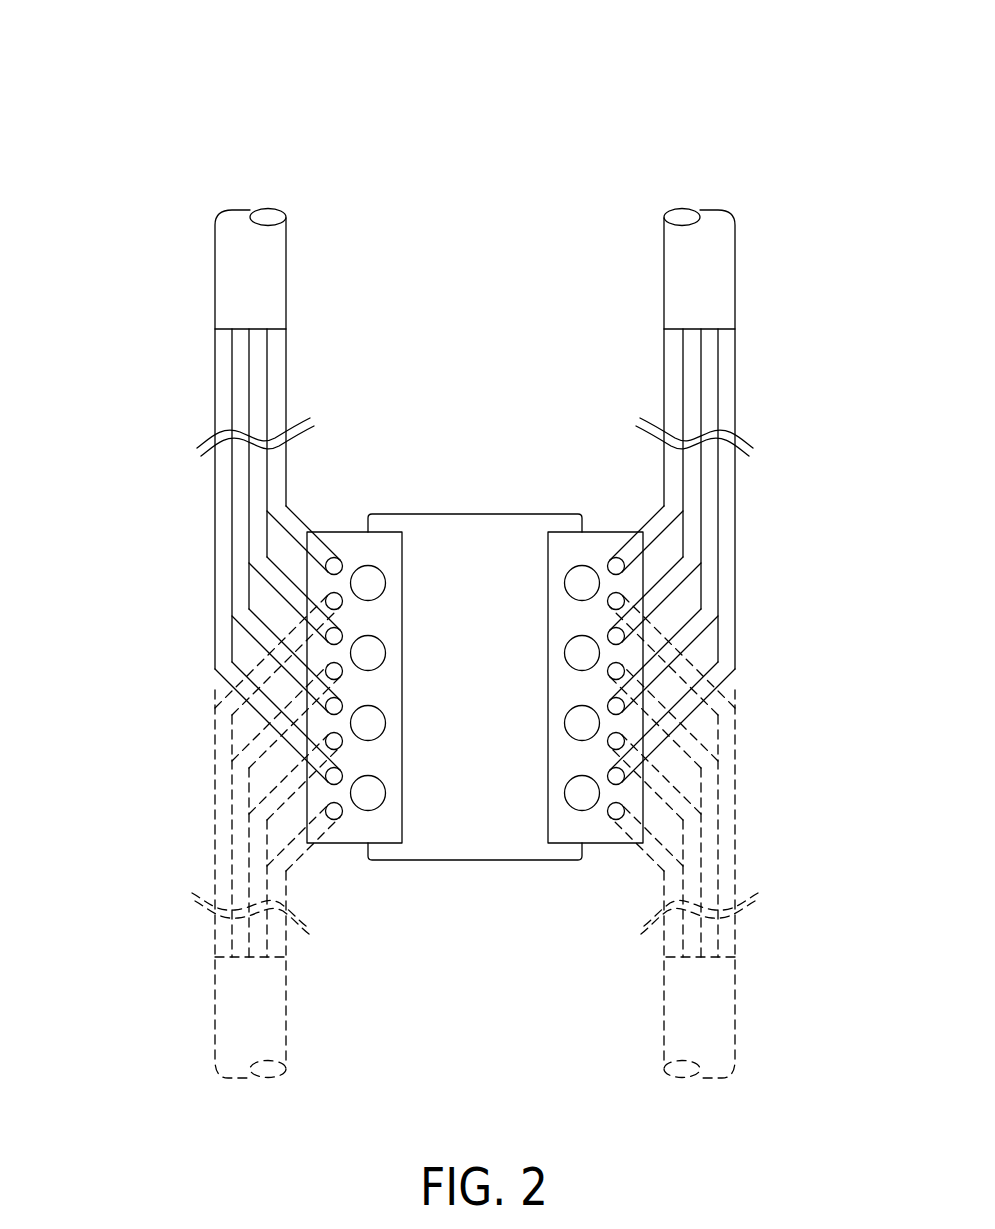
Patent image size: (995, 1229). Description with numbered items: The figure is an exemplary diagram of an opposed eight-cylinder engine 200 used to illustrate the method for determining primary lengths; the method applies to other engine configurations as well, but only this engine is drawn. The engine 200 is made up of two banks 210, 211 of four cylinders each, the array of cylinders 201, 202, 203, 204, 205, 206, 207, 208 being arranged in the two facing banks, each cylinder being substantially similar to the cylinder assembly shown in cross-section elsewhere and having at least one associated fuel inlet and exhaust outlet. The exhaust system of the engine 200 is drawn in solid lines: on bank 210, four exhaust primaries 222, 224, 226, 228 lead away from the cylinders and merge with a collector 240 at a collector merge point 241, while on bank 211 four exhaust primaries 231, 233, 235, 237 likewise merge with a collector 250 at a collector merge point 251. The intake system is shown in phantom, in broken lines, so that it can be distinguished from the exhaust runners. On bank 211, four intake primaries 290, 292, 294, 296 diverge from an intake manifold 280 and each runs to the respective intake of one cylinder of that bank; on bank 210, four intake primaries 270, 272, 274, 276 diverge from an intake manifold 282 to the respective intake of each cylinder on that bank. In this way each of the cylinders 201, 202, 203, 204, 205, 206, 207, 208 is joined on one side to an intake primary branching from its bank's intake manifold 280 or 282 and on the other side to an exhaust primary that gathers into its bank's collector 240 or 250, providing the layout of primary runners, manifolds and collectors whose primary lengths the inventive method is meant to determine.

The eight-cylinder engine 200 is at (150, 100).
The collector 250 is at (228, 280).
The collector merge point 251 is at (222, 333).
The exhaust primary 231 is at (288, 532).
The exhaust primary 233 is at (277, 578).
The exhaust primary 235 is at (256, 624).
The exhaust primary 237 is at (237, 674).
The intake primary 290 is at (228, 690).
The intake primary 292 is at (236, 718).
The intake primary 294 is at (247, 772).
The intake primary 296 is at (265, 830).
The intake manifold 280 is at (213, 1038).
The bank 211 is at (330, 843).
The cylinder 201 is at (381, 594).
The cylinder 203 is at (377, 668).
The cylinder 205 is at (380, 735).
The cylinder 207 is at (380, 805).
The bank 210 is at (580, 860).
The cylinder 202 is at (569, 594).
The cylinder 204 is at (573, 668).
The cylinder 206 is at (570, 735).
The cylinder 208 is at (570, 805).
The collector 240 is at (721, 281).
The collector merge point 241 is at (733, 332).
The exhaust primary 222 is at (662, 535).
The exhaust primary 224 is at (673, 580).
The exhaust primary 226 is at (694, 625).
The exhaust primary 228 is at (713, 675).
The intake primary 270 is at (736, 700).
The intake primary 272 is at (735, 737).
The intake primary 274 is at (735, 793).
The intake primary 276 is at (735, 850).
The intake manifold 282 is at (737, 1040).